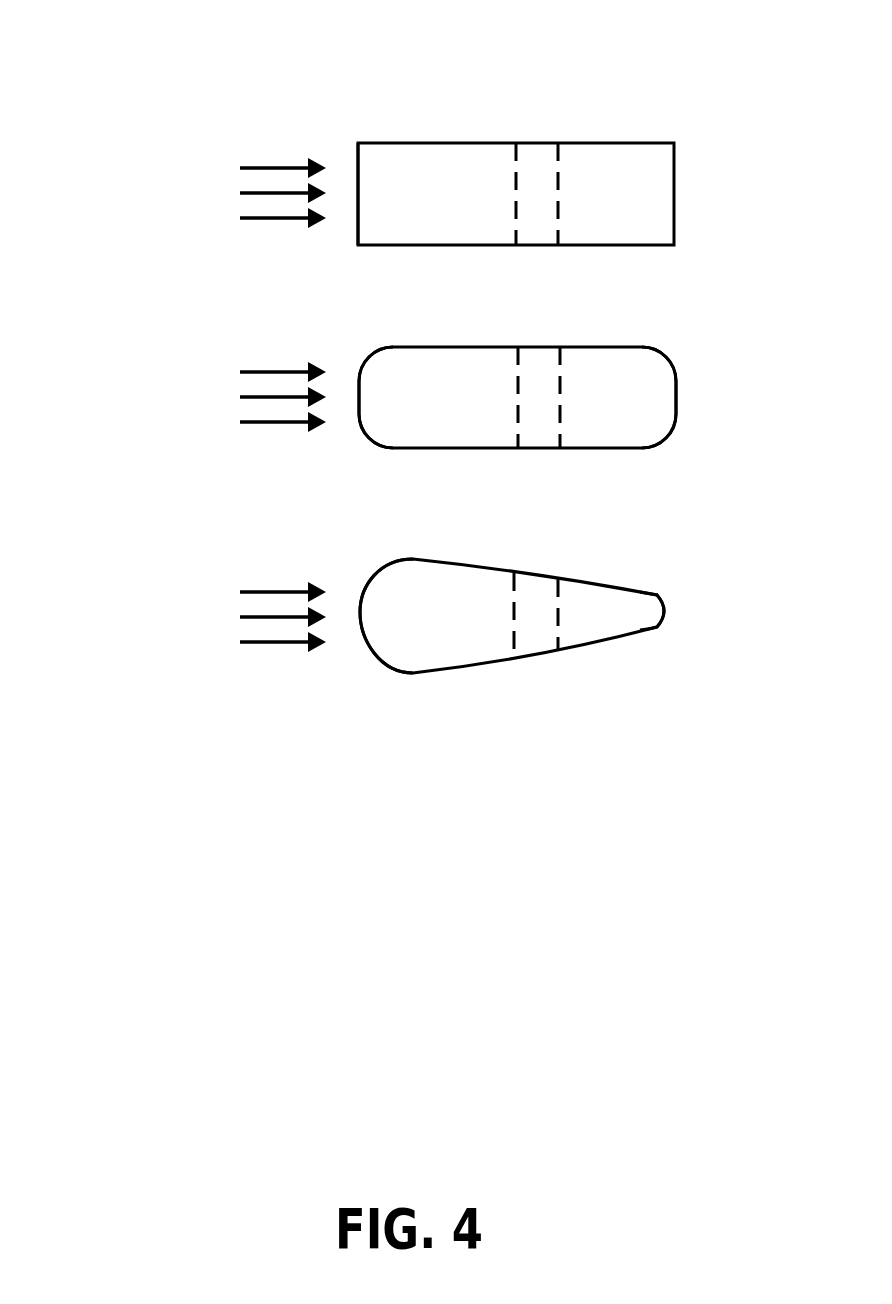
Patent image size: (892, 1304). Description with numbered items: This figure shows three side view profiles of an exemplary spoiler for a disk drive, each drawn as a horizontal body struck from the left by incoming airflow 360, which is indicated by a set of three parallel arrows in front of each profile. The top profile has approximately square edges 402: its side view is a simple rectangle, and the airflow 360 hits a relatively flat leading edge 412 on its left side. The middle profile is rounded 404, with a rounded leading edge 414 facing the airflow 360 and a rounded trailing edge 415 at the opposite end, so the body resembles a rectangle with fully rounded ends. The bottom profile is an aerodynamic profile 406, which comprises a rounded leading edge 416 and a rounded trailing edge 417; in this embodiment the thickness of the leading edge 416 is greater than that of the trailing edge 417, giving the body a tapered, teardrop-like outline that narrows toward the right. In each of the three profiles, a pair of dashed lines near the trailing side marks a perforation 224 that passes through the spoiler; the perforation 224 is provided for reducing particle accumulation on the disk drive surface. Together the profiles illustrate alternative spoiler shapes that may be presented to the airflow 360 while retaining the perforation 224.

The airflow 360 is at (228, 197).
The perforation 224 is at (538, 163).
The approximately square edges 402 is at (674, 195).
The relatively flat leading edge 412 is at (357, 175).
The rounded side profile 404 is at (676, 397).
The rounded leading edge 414 is at (360, 375).
The rounded trailing edge 415 is at (652, 358).
The aerodynamic profile 406 is at (666, 606).
The rounded leading edge 416 is at (360, 595).
The rounded trailing edge 417 is at (623, 588).